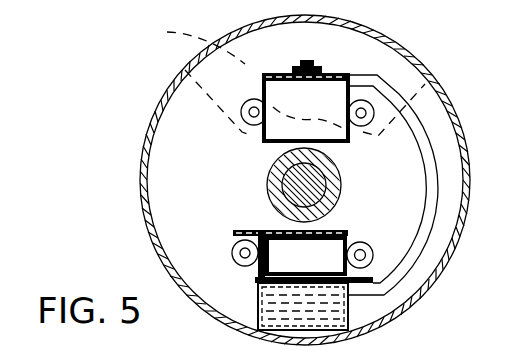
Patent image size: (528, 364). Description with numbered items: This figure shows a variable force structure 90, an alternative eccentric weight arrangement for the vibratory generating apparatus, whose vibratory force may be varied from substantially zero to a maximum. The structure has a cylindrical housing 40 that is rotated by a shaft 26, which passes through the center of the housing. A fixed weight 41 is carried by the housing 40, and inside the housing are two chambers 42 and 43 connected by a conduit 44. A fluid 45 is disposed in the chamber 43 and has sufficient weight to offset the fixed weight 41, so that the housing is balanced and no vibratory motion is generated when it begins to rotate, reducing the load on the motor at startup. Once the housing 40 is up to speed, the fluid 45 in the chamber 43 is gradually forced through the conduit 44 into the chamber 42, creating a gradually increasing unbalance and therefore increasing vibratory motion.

The variable force structure 90 is at (428, 49).
The cylindrical housing 40 is at (468, 206).
The fixed weight 41 is at (281, 79).
The chamber 42 is at (246, 122).
The chamber 43 is at (398, 314).
The conduit 44 is at (422, 217).
The fluid 45 is at (258, 306).
The vibratory shaft 26 is at (267, 186).